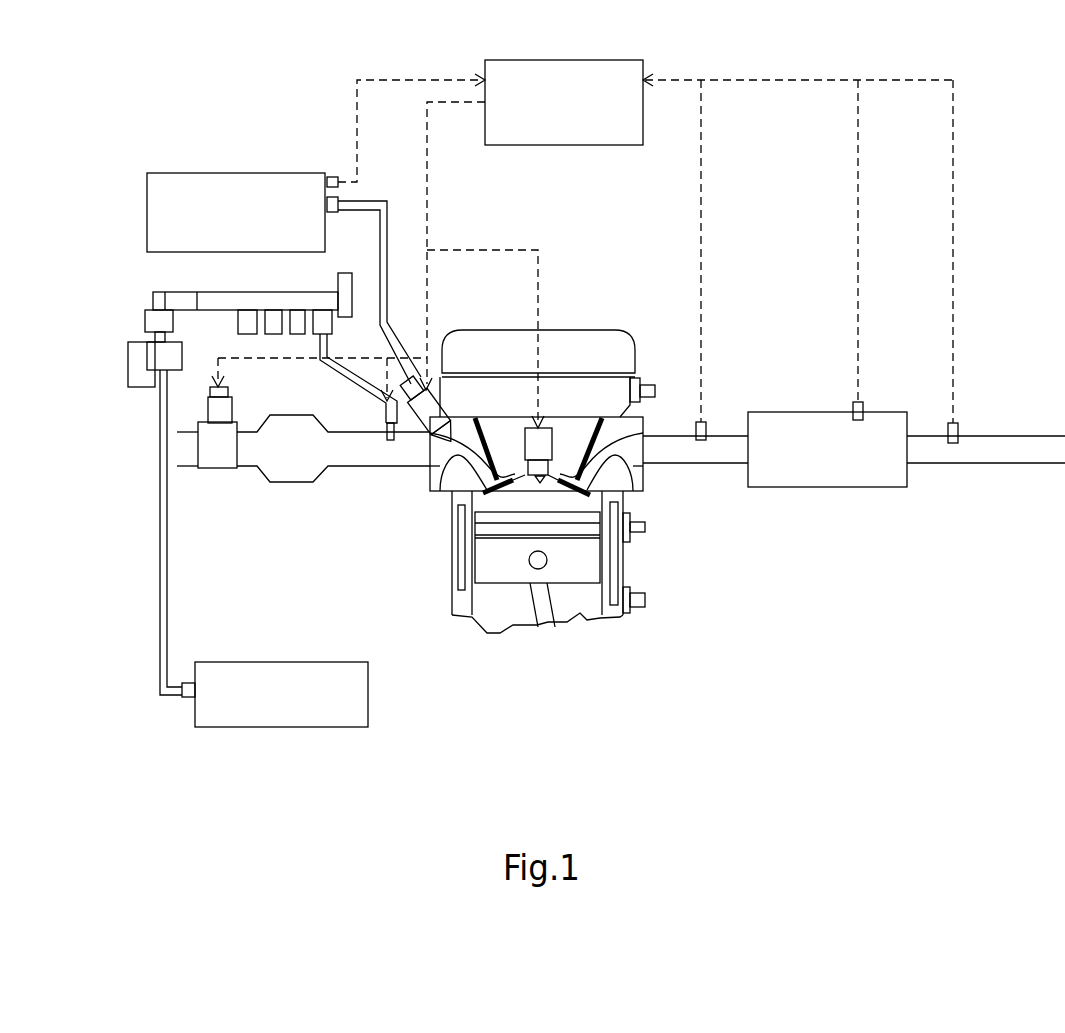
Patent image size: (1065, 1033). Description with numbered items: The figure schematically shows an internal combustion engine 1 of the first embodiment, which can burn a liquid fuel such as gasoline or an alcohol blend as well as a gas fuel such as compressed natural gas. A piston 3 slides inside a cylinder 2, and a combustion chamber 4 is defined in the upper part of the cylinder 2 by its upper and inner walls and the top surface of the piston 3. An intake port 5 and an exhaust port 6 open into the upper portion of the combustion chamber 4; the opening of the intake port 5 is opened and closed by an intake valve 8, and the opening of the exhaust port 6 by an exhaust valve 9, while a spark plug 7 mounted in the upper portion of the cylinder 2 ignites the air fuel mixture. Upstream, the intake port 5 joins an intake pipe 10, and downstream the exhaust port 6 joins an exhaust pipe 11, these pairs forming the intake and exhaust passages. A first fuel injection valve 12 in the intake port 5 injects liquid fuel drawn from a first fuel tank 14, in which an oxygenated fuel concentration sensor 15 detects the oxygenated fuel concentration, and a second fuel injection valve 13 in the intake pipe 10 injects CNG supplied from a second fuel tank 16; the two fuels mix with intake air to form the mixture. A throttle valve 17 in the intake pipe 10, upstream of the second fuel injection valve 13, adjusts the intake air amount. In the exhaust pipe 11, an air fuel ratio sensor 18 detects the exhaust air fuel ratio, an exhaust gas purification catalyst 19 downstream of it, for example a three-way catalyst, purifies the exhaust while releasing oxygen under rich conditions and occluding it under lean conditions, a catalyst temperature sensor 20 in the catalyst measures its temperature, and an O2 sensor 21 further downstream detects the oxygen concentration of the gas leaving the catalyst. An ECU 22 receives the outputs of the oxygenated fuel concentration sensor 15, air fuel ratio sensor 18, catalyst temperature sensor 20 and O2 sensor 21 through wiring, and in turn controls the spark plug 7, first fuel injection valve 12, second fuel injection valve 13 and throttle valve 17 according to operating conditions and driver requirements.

The internal combustion engine 1 is at (730, 594).
The cylinder 2 is at (630, 560).
The piston 3 is at (577, 572).
The combustion chamber 4 is at (553, 502).
The intake port 5 is at (443, 480).
The exhaust port 6 is at (632, 485).
The spark plug 7 is at (557, 435).
The intake valve 8 is at (498, 456).
The exhaust valve 9 is at (587, 452).
The intake pipe 10 is at (387, 468).
The exhaust pipe 11 is at (703, 465).
The first fuel injection valve 12 is at (430, 380).
The second fuel injection valve 13 is at (385, 420).
The first fuel tank 14 is at (258, 173).
The oxygenated fuel concentration sensor 15 is at (333, 175).
The second fuel tank 16 is at (315, 662).
The throttle valve 17 is at (237, 418).
The air fuel ratio sensor 18 is at (708, 427).
The exhaust gas purification catalyst 19 is at (805, 412).
The catalyst temperature sensor 20 is at (865, 407).
The O2 sensor 21 is at (960, 428).
The ECU 22 is at (564, 146).